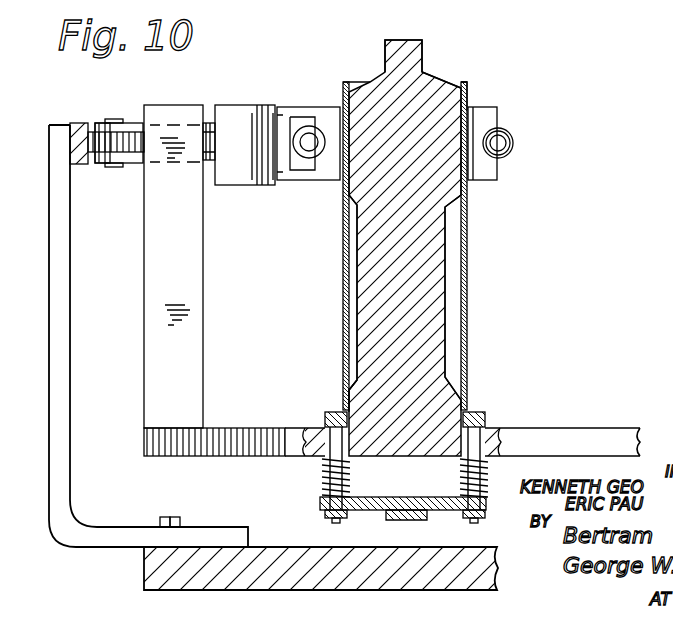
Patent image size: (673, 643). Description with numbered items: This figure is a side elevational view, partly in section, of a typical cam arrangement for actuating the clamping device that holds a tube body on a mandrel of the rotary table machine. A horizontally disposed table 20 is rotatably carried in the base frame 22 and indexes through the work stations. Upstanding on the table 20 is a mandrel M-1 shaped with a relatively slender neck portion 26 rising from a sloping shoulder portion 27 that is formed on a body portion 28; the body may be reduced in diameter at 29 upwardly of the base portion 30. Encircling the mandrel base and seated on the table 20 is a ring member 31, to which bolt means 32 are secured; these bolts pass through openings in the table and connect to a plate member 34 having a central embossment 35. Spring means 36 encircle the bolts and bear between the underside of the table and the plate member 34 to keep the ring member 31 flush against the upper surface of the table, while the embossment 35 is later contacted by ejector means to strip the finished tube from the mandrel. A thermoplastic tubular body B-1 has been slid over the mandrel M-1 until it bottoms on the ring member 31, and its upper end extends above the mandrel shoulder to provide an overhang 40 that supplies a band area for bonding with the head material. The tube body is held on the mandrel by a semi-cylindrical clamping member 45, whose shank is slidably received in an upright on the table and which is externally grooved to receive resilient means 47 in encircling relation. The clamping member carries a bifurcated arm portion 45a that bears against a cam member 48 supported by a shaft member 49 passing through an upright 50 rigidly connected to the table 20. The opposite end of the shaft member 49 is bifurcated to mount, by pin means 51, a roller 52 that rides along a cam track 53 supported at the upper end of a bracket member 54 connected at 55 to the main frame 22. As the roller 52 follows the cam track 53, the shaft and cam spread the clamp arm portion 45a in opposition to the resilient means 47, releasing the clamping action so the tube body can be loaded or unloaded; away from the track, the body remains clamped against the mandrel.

The table 20 is at (562, 432).
The base frame 22 is at (282, 540).
The neck portion 26 is at (412, 50).
The shoulder portion 27 is at (435, 74).
The body portion 28 is at (347, 212).
The reduced diameter portion 29 is at (440, 300).
The base portion 30 is at (372, 398).
The ring member 31 is at (482, 410).
The bolt means 32 is at (327, 417).
The plate member 34 is at (360, 498).
The embossment 35 is at (397, 518).
The spring means 36 is at (325, 470).
The overhang 40 is at (466, 83).
The clamping member 45 is at (485, 119).
The bifurcated arm portion 45a is at (288, 110).
The resilient means 47 is at (513, 142).
The cam member 48 is at (242, 108).
The shaft member 49 is at (212, 108).
The upright 50 is at (153, 250).
The pin means 51 is at (115, 120).
The roller 52 is at (110, 142).
The cam track 53 is at (78, 127).
The bracket member 54 is at (68, 315).
The connection 55 is at (173, 517).
The thermoplastic tubular body B-1 is at (468, 245).
The mandrel M-1 is at (383, 298).